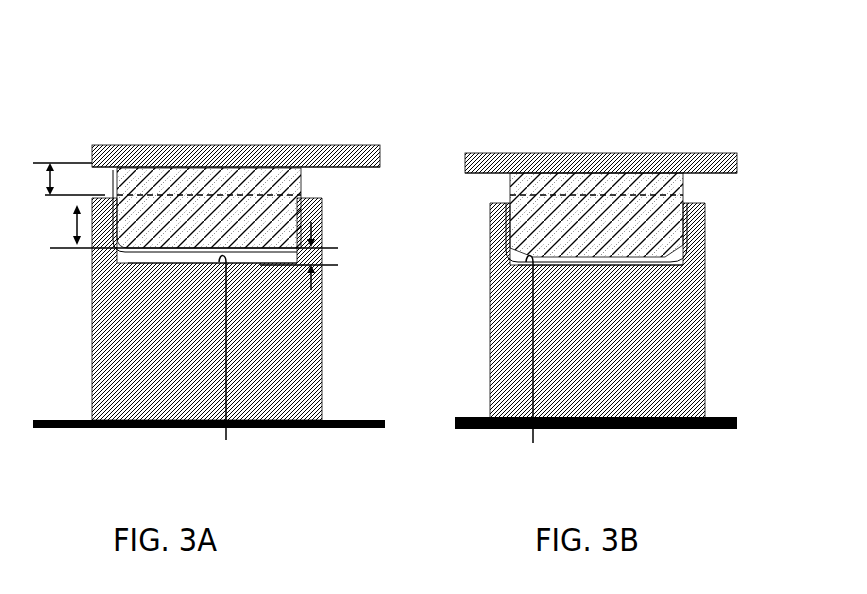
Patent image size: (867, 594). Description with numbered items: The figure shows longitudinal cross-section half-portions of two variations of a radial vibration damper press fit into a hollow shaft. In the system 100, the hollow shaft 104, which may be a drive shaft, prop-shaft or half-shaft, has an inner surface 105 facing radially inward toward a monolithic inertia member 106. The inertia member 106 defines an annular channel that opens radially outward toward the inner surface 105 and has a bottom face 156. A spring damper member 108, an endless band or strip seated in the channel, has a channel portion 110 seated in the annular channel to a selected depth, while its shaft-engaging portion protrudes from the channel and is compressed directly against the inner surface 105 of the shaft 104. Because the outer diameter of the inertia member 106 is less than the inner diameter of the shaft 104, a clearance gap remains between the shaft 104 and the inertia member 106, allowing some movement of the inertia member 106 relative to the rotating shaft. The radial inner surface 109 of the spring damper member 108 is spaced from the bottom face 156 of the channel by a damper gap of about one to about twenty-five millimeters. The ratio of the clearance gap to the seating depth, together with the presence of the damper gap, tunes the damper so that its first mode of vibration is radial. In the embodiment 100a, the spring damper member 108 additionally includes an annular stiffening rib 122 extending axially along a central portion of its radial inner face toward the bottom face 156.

In FIG. 3A, the system 100 is at (162, 42).
In FIG. 3B, the embodiment 100a is at (586, 55).
In FIG. 3A, the hollow shaft 104 is at (112, 145).
In FIG. 3B, the hollow shaft 104 is at (517, 153).
In FIG. 3A, the inner surface 105 is at (352, 168).
In FIG. 3B, the inner surface 105 is at (480, 173).
In FIG. 3A, the monolithic inertia member 106 is at (90, 353).
In FIG. 3B, the monolithic inertia member 106 is at (490, 352).
In FIG. 3A, the spring damper member 108 is at (235, 168).
In FIG. 3B, the spring damper member 108 is at (637, 173).
In FIG. 3A, the radial inner surface 109 is at (242, 250).
In FIG. 3B, the radial inner surface 109 is at (627, 257).
In FIG. 3A, the channel portion 110 is at (178, 228).
In FIG. 3B, the channel portion 110 is at (665, 217).
In FIG. 3B, the annular stiffening rib 122 is at (653, 243).
In FIG. 3A, the bottom face 156 is at (228, 366).
In FIG. 3B, the bottom face 156 is at (537, 362).